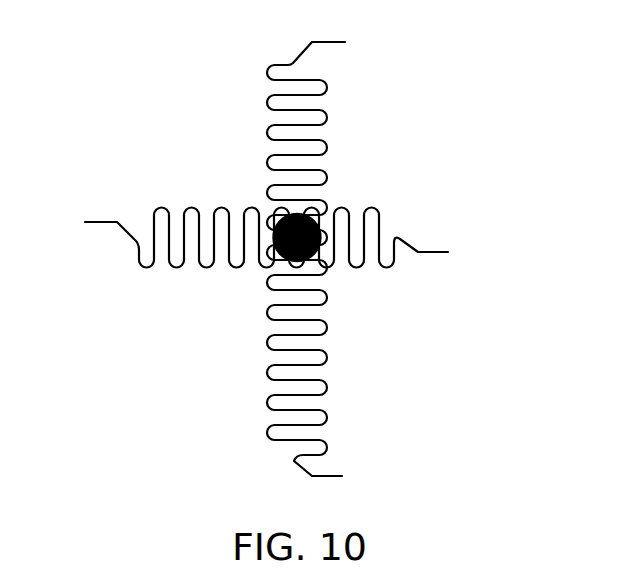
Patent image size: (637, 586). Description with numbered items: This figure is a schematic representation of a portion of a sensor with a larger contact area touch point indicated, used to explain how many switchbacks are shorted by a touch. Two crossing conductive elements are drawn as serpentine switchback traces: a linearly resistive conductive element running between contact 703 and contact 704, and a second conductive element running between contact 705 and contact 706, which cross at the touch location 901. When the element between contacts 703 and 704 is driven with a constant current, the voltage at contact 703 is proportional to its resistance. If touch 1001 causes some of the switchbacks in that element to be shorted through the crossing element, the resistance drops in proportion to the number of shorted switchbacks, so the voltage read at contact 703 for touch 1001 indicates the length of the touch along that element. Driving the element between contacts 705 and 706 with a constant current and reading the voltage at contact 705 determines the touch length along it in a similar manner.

The contact 703 is at (328, 138).
The contact 704 is at (328, 367).
The contact 705 is at (170, 238).
The contact 706 is at (399, 238).
The touch location 901 is at (266, 260).
The touch 1001 is at (316, 256).